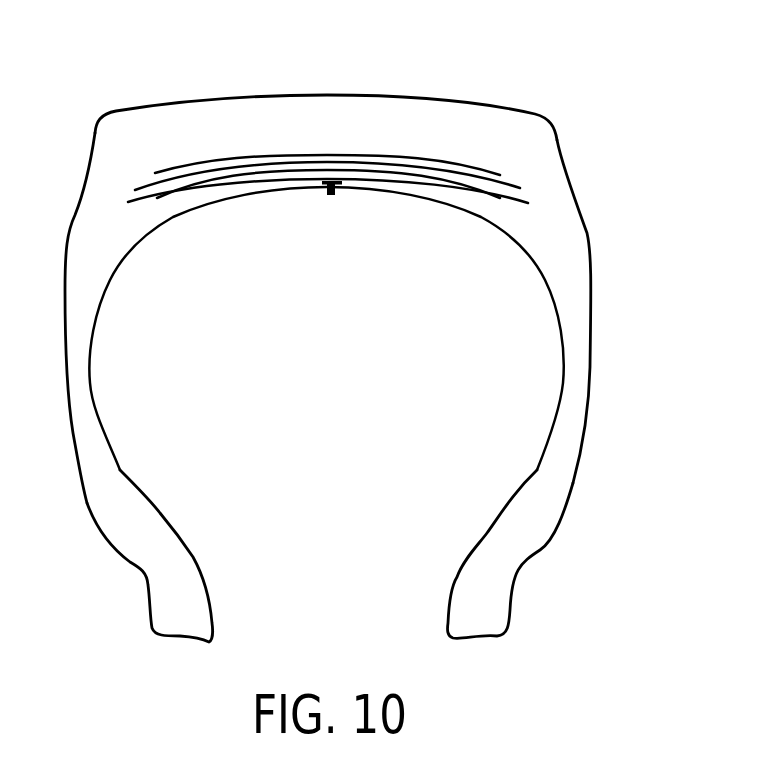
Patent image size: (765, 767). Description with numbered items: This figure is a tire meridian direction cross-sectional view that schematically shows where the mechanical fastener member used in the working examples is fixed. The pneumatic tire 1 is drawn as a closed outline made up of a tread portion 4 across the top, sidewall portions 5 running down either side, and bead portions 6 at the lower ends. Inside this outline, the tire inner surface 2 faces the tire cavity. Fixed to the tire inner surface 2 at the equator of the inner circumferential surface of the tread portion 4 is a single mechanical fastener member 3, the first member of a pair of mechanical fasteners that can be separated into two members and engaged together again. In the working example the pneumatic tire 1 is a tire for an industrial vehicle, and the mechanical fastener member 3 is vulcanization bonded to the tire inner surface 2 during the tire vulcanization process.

The pneumatic tire 1 is at (478, 79).
The tire inner surface 2 is at (173, 220).
The mechanical fastener member 3 is at (330, 196).
The tread portion 4 is at (223, 97).
The sidewall portion 5 is at (582, 386).
The bead portion 6 is at (495, 605).